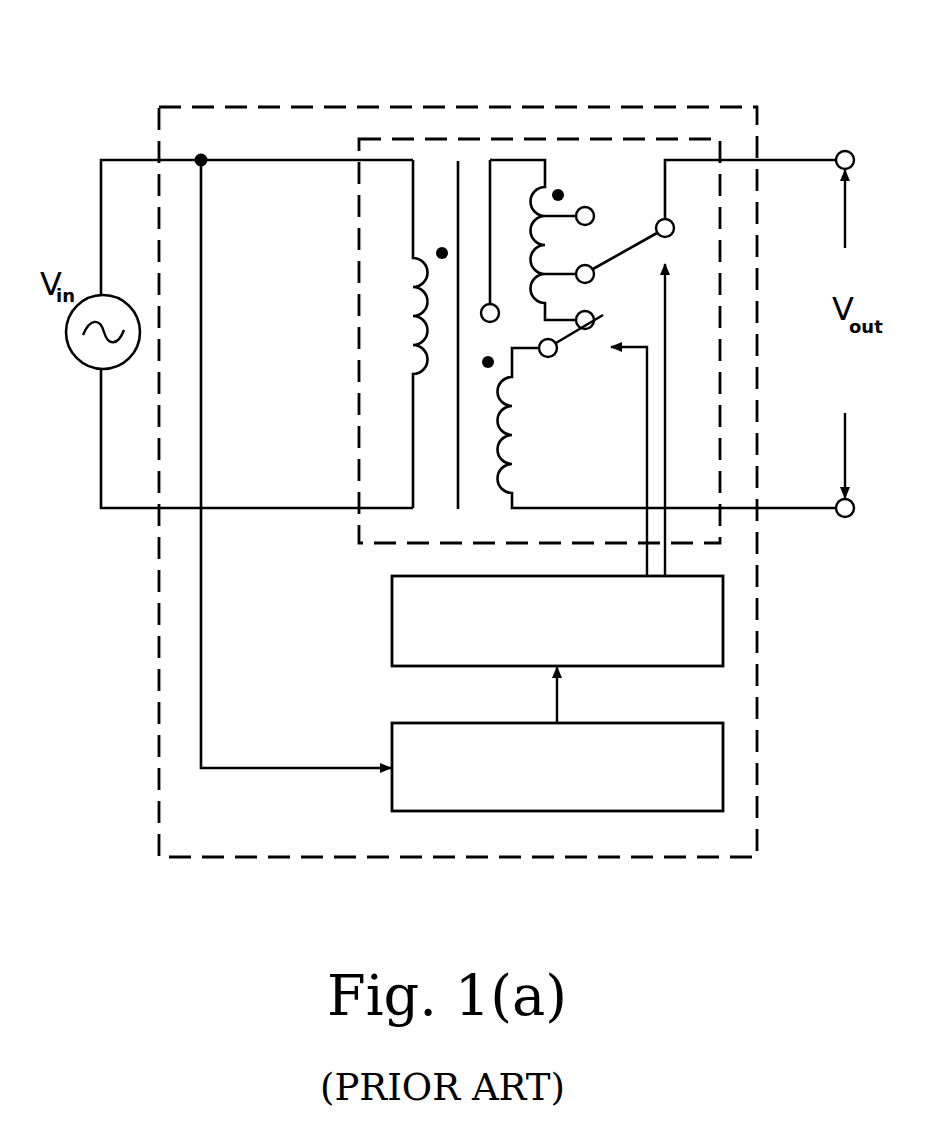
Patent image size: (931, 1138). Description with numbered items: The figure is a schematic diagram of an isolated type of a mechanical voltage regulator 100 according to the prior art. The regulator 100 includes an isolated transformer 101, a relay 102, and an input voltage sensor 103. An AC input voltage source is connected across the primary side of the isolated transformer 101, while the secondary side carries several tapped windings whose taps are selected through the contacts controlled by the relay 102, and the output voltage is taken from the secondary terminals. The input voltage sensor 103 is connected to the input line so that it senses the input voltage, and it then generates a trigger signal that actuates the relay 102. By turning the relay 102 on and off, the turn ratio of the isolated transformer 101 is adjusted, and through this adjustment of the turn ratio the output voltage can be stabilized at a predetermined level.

The isolated type of a mechanical voltage regulator 100 is at (228, 136).
The isolated transformer 101 is at (622, 168).
The relay 102 is at (413, 617).
The input voltage sensor 103 is at (415, 752).